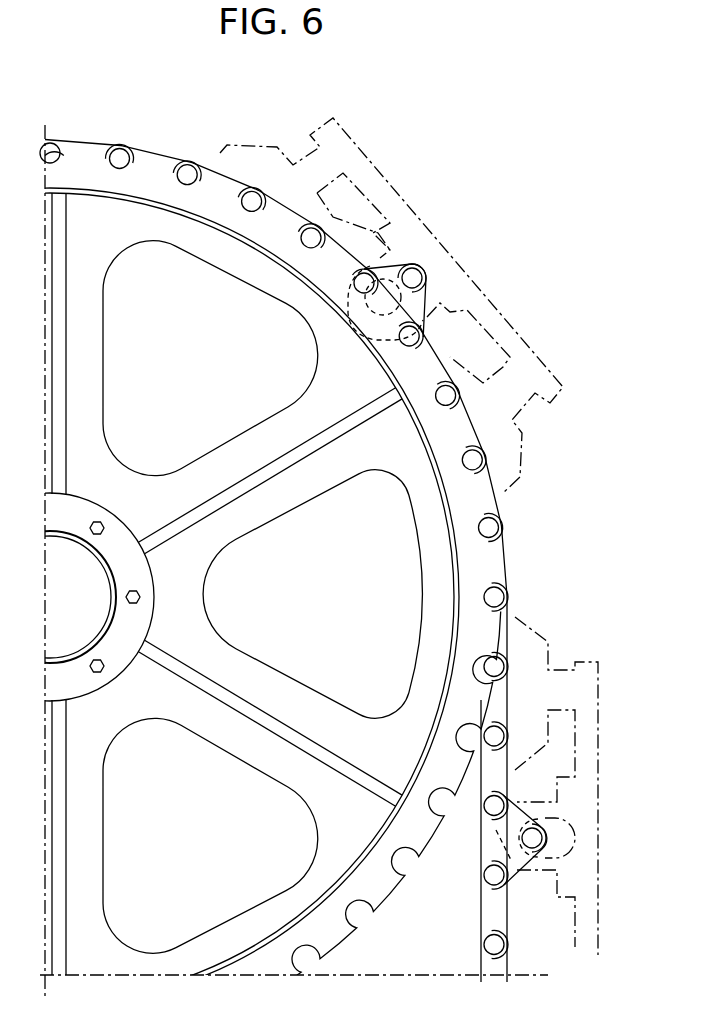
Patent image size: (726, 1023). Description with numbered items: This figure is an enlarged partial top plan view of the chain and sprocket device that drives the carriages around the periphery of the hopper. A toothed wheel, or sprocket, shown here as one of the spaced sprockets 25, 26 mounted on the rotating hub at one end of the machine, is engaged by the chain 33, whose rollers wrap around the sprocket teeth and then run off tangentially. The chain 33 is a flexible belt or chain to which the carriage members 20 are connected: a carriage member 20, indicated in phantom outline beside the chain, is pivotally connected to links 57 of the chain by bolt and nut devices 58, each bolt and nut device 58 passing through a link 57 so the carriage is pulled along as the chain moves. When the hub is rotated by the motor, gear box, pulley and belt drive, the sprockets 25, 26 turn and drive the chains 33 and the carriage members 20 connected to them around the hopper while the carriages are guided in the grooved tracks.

The sprocket 25 is at (250, 541).
The sprocket 26 is at (143, 168).
The chain 33 is at (299, 561).
The link 57 is at (487, 838).
The bolt and nut fastener 58 is at (413, 272).
The carriage member 20 is at (582, 783).